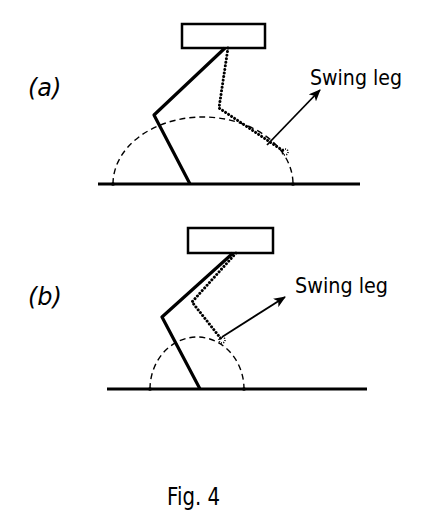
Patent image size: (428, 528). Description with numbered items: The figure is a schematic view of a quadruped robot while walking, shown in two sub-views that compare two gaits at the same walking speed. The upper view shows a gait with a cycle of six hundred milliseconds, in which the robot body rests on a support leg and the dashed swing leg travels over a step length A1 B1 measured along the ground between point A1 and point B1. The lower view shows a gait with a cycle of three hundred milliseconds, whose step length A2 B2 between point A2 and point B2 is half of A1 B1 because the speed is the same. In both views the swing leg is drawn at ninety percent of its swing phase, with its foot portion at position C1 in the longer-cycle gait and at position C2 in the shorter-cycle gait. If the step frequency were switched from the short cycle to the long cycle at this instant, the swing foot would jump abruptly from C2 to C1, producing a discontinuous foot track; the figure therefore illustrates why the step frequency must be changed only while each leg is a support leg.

The start point of step length A1B1 A1 is at (100, 206).
The end point of step length A1B1 B1 is at (316, 206).
The swing leg position in the 600 ms gait C1 is at (307, 136).
The start point of step length A2B2 A2 is at (139, 411).
The end point of step length A2B2 B2 is at (256, 411).
The swing leg position in the 300 ms gait C2 is at (248, 338).